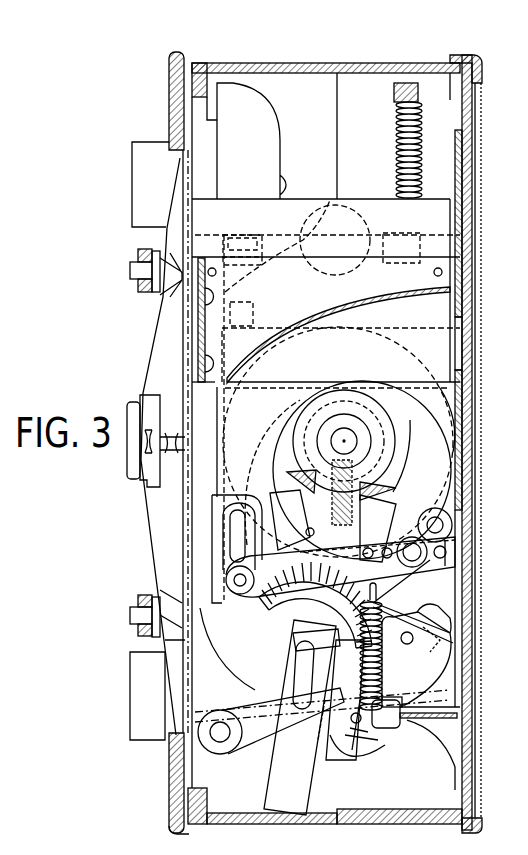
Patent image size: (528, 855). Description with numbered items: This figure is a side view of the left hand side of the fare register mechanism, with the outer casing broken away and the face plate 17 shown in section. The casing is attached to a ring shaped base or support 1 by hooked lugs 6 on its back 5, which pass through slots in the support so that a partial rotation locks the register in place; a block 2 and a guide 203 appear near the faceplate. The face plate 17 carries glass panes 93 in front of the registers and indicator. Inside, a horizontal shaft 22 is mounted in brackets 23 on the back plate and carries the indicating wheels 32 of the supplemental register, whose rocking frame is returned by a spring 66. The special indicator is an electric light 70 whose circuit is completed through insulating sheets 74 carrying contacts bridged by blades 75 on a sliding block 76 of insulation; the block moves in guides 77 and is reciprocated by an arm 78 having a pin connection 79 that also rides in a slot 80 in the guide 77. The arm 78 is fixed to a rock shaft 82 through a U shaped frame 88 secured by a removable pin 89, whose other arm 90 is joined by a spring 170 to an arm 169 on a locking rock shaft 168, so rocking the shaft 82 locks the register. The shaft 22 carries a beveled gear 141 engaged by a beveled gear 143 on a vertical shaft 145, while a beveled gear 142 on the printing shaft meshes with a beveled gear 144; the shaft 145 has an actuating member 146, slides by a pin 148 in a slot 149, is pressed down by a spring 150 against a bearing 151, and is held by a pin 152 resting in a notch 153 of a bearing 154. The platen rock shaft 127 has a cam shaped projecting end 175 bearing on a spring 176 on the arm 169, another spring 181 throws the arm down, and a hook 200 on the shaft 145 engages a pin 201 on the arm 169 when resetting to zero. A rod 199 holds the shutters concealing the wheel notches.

The ring shaped base or support 1 is at (168, 114).
The escutcheon block 2 is at (156, 438).
The back of the casing 5 is at (185, 343).
The hooked lugs 6 is at (180, 244).
The face plate 17 is at (467, 350).
The horizontal shaft 22 is at (344, 434).
The brackets 23 is at (433, 422).
The indicating wheels of the supplemental register 32 is at (462, 481).
The spring 66 is at (398, 163).
The electric light 70 is at (333, 206).
The insulating sheets 74 is at (338, 442).
The blades 75 is at (341, 342).
The sliding block of insulation 76 is at (402, 392).
The guides 77 is at (246, 523).
The arm 78 is at (340, 567).
The pin connection 79 is at (225, 581).
The slot 80 is at (195, 535).
The rock shaft 82 is at (415, 567).
The U shaped frame 88 is at (450, 553).
The removable pin 89 is at (413, 520).
The arm of the U shaped frame 90 is at (408, 595).
The glass panes 93 is at (473, 440).
The rock shaft 127 is at (331, 720).
The beveled gear 141 is at (383, 470).
The beveled gear 142 is at (384, 665).
The beveled gear 143 is at (390, 485).
The beveled gear 144 is at (237, 559).
The vertical shaft 145 is at (315, 605).
The actuating member 146 is at (276, 805).
The pin 148 is at (306, 534).
The slot 149 is at (290, 520).
The spring 150 is at (364, 511).
The bearing 151 is at (288, 460).
The pin 152 is at (330, 690).
The notch 153 is at (316, 650).
The bearing 154 is at (227, 649).
The rock shaft 168 is at (200, 745).
The arm 169 is at (322, 721).
The spring 170 is at (383, 684).
The cam shaped projecting end 175 is at (326, 770).
The spring 176 is at (378, 741).
The spring 181 is at (262, 703).
The rod 199 is at (444, 556).
The projection or hook 200 is at (357, 764).
The pin 201 is at (374, 738).
The guide 203 is at (251, 141).